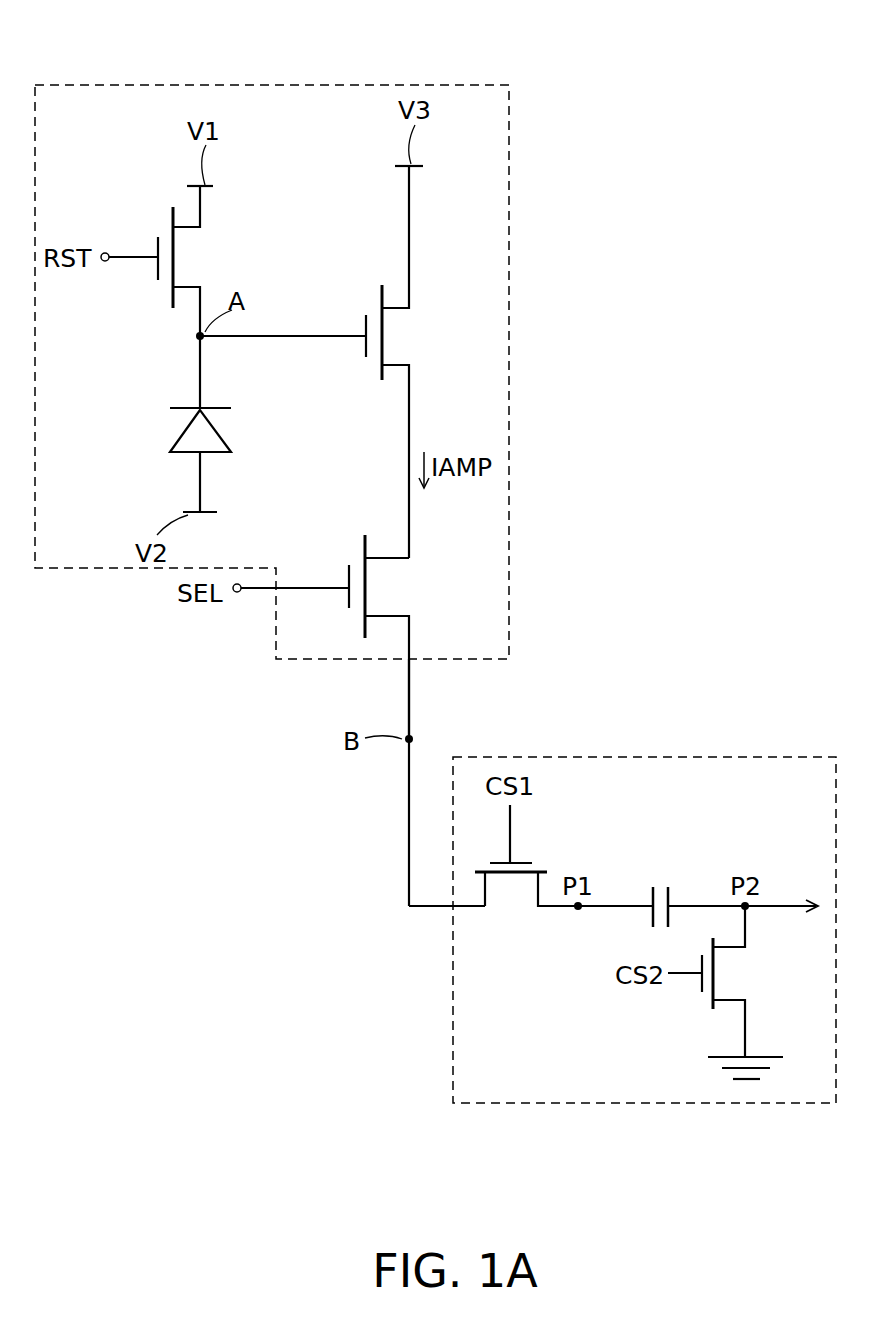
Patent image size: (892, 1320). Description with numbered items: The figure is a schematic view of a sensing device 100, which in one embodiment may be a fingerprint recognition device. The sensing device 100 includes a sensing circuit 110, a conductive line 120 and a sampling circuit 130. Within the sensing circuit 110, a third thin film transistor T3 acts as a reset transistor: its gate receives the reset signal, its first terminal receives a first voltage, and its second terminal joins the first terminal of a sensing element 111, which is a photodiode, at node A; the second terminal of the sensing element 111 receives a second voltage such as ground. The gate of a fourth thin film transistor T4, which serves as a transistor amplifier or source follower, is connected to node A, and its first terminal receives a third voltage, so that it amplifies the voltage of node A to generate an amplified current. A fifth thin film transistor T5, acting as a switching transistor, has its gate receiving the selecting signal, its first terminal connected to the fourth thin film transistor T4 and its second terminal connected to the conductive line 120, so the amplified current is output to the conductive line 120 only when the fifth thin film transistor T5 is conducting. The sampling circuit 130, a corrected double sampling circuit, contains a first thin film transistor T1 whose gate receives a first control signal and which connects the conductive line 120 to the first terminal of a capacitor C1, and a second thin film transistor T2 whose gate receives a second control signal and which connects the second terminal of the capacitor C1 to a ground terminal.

The sensing device 100 is at (100, 27).
The sensing circuit 110 is at (512, 198).
The sensing element 111 is at (178, 435).
The conductive line 120 is at (405, 687).
The sampling circuit 130 is at (645, 757).
The first thin film transistor T1 is at (512, 895).
The second thin film transistor T2 is at (736, 974).
The third thin film transistor T3 is at (197, 259).
The fourth thin film transistor T4 is at (405, 337).
The fifth thin film transistor T5 is at (412, 589).
The capacitor C1 is at (659, 885).